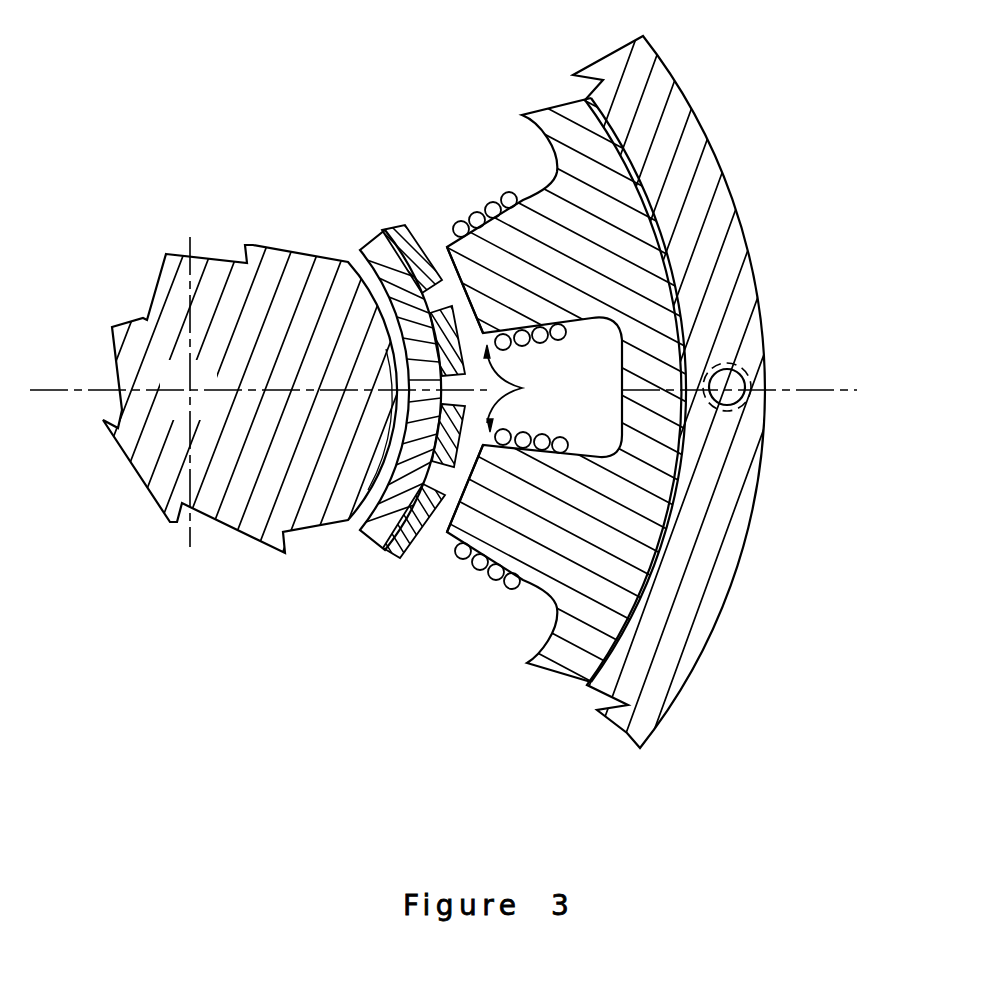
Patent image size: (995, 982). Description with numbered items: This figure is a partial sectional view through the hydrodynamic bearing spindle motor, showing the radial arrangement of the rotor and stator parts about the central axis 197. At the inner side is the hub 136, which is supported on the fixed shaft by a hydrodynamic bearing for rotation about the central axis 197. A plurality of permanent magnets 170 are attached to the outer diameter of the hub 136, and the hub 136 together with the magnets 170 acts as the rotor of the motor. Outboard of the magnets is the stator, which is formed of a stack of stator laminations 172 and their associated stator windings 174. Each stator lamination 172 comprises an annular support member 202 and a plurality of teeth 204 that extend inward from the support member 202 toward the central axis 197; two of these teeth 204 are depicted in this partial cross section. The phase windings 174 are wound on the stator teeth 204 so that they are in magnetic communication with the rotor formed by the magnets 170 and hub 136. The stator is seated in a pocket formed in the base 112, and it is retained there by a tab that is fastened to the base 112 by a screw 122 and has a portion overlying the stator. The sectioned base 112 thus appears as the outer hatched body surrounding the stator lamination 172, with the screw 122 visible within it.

The base 112 is at (243, 287).
The screw 122 is at (735, 379).
The hub 136 is at (383, 262).
The permanent magnets 170 is at (420, 553).
The stator lamination 172 is at (430, 167).
The stator windings 174 is at (468, 207).
The central axis 197 is at (190, 390).
The annular support member 202 is at (650, 342).
The teeth 204 is at (522, 388).